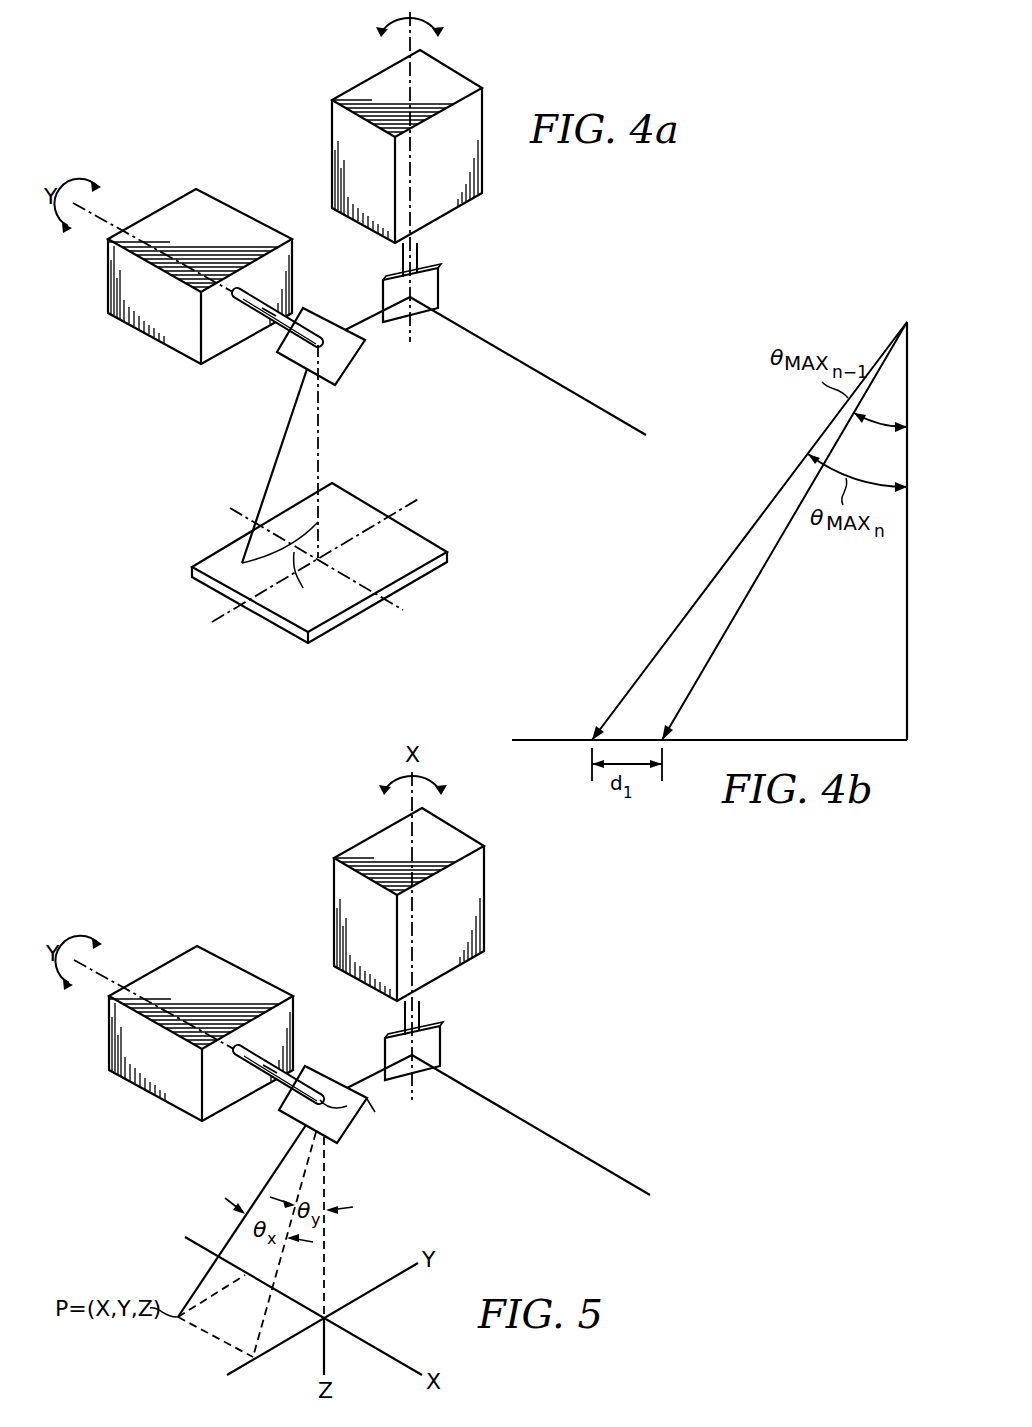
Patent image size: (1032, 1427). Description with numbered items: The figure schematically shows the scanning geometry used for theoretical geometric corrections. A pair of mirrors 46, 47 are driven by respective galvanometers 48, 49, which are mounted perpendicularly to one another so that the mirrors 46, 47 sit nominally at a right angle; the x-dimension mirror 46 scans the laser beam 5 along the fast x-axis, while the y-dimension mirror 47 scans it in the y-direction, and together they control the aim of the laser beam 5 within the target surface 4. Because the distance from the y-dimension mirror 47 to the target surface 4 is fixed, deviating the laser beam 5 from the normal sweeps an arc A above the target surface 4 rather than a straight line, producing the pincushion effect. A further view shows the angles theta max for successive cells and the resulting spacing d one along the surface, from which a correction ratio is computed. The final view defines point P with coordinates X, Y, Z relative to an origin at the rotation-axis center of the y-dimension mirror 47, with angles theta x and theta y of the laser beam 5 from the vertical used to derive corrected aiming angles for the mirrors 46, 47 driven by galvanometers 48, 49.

In FIG. 4a, the target surface 4 is at (358, 508).
In FIG. 4a, the laser beam 5 is at (520, 361).
In FIG. 5, the laser beam 5 is at (556, 1139).
In FIG. 4a, the x-dimension mirror 46 is at (440, 282).
In FIG. 5, the x-dimension mirror 46 is at (440, 1045).
In FIG. 4a, the y-dimension mirror 47 is at (346, 372).
In FIG. 5, the y-dimension mirror 47 is at (292, 1118).
In FIG. 4a, the galvanometer 48 is at (455, 85).
In FIG. 5, the galvanometer 48 is at (463, 840).
In FIG. 4a, the galvanometer 49 is at (192, 200).
In FIG. 5, the galvanometer 49 is at (185, 958).